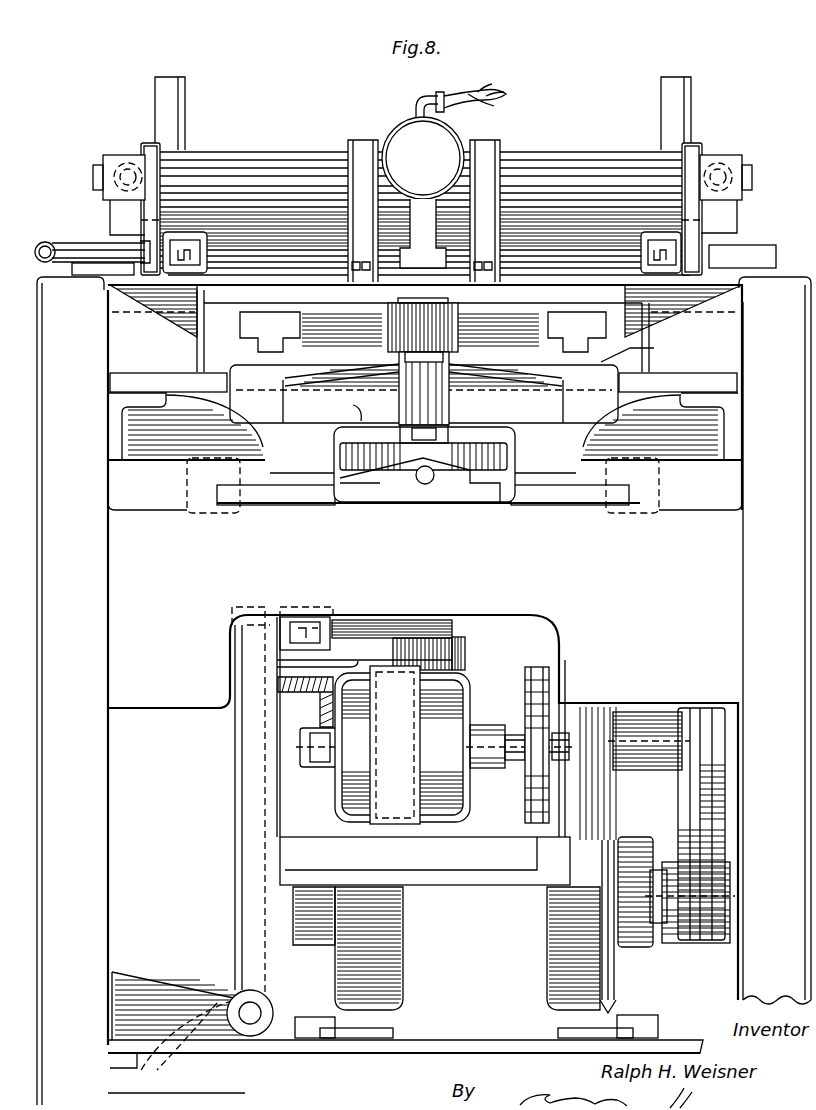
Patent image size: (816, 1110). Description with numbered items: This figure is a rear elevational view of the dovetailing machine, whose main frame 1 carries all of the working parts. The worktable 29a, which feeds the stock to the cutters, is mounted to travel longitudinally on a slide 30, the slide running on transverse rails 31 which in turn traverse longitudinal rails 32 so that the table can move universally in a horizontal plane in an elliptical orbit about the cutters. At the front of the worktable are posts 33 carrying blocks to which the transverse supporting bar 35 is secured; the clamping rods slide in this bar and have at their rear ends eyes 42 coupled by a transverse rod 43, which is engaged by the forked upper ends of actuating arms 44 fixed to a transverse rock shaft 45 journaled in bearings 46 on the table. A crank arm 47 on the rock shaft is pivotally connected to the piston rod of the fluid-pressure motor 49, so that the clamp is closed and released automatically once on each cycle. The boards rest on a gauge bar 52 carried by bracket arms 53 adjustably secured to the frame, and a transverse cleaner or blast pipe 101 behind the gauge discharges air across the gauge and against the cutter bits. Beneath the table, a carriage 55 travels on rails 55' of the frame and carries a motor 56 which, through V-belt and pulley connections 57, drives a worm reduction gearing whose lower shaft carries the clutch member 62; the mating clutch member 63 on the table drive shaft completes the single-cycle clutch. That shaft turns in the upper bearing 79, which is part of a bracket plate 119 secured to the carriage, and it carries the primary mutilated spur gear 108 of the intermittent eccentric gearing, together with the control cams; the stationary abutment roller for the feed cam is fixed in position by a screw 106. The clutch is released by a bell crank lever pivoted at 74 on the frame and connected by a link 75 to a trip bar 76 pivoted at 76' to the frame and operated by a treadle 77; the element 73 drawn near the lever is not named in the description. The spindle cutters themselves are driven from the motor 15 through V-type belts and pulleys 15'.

The main frame 1 is at (76, 564).
The motor 15 is at (676, 909).
The V-type belts and pulleys 15' is at (694, 824).
The worktable 29a is at (426, 324).
The slide 30 is at (639, 348).
The transverse rails 31 is at (144, 385).
The longitudinal rails 32 is at (240, 324).
The posts 33 is at (165, 92).
The transverse supporting bar 35 is at (586, 157).
The eyes 42 is at (122, 190).
The transverse rod 43 is at (523, 172).
The actuating arms 44 is at (146, 144).
The transverse rock shaft 45 is at (564, 253).
The bearings 46 is at (210, 261).
The crank arm 47 is at (438, 234).
The motor 49 is at (444, 141).
The gauge bar 52 is at (775, 238).
The bracket arms 53 is at (108, 297).
The carriage 55 is at (423, 667).
The rails 55' is at (423, 499).
The motor 56 is at (402, 745).
The V-belt and pulley connections 57 is at (535, 703).
The clutch member 62 is at (463, 661).
The clutch member 63 is at (460, 624).
The shaft 73 is at (362, 625).
The pivot 74 is at (315, 610).
The link 75 is at (264, 614).
The trip bar 76 is at (216, 807).
The pivot 76' is at (268, 1008).
The treadle 77 is at (165, 1076).
The bearing 79 is at (412, 404).
The cleaner or blast pipe 101 is at (72, 248).
The screw 106 is at (428, 483).
The primary mutilated spur gear 108 is at (386, 336).
The bracket plate 119 is at (341, 407).